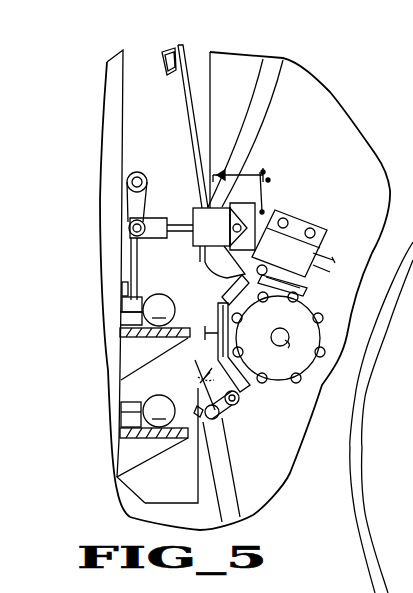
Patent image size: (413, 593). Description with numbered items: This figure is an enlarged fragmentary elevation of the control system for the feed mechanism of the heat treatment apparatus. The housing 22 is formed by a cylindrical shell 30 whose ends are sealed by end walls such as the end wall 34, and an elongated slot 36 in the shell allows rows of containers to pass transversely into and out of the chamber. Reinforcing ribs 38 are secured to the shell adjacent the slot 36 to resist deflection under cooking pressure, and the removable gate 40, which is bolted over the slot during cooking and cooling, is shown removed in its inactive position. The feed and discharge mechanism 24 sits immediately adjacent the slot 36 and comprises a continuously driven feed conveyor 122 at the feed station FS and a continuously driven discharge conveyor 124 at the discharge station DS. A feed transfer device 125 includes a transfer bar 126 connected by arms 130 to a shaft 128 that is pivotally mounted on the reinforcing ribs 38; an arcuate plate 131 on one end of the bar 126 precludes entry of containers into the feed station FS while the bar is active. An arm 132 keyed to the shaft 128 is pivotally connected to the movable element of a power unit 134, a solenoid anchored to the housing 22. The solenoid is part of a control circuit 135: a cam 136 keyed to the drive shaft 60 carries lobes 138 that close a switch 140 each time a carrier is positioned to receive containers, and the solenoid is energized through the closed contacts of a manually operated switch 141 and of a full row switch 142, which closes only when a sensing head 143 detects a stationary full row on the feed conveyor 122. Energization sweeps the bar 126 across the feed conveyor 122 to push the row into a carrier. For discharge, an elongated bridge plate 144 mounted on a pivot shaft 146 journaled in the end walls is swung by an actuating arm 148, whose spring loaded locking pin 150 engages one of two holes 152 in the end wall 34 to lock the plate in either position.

The housing 22 is at (412, 108).
The feed and discharge mechanism 24 is at (118, 195).
The cylindrical shell 30 is at (282, 60).
The end wall 34 is at (325, 84).
The elongated slot 36 is at (202, 294).
The reinforcing ribs 38 is at (107, 80).
The removable gate 40 is at (177, 102).
The drive shaft 60 is at (277, 349).
The feed conveyor 122 is at (135, 327).
The discharge conveyor 124 is at (143, 437).
The feed transfer device 125 is at (122, 235).
The transfer bar 126 is at (124, 303).
The shaft 128 is at (143, 173).
The arms 130 is at (132, 250).
The arcuate plate 131 is at (122, 319).
The arm 132 is at (142, 204).
The power unit 134 is at (226, 241).
The control circuit 135 is at (277, 169).
The cam 136 is at (300, 296).
The lobes 138 is at (312, 307).
The switch 140 is at (300, 262).
The manually operated switch 141 is at (245, 173).
The full row switch 142 is at (272, 181).
The sensing head 143 is at (122, 288).
The bridge plate 144 is at (200, 384).
The pivot shaft 146 is at (239, 396).
The actuating arm 148 is at (222, 413).
The spring loaded locking pin 150 is at (222, 418).
The holes 152 is at (182, 370).
The feed station FS is at (140, 268).
The discharge station DS is at (150, 447).